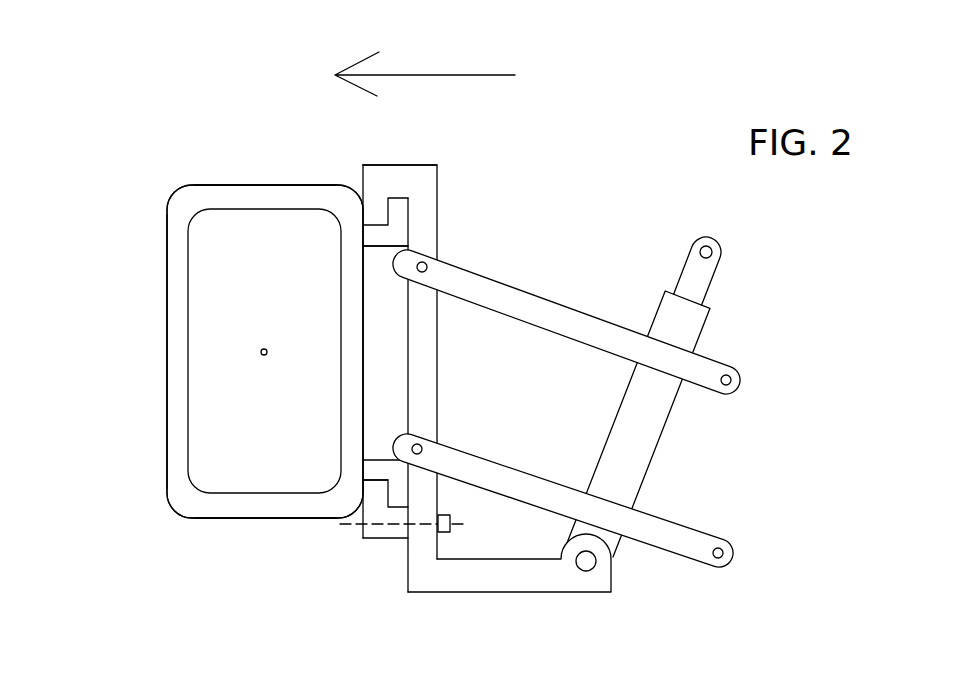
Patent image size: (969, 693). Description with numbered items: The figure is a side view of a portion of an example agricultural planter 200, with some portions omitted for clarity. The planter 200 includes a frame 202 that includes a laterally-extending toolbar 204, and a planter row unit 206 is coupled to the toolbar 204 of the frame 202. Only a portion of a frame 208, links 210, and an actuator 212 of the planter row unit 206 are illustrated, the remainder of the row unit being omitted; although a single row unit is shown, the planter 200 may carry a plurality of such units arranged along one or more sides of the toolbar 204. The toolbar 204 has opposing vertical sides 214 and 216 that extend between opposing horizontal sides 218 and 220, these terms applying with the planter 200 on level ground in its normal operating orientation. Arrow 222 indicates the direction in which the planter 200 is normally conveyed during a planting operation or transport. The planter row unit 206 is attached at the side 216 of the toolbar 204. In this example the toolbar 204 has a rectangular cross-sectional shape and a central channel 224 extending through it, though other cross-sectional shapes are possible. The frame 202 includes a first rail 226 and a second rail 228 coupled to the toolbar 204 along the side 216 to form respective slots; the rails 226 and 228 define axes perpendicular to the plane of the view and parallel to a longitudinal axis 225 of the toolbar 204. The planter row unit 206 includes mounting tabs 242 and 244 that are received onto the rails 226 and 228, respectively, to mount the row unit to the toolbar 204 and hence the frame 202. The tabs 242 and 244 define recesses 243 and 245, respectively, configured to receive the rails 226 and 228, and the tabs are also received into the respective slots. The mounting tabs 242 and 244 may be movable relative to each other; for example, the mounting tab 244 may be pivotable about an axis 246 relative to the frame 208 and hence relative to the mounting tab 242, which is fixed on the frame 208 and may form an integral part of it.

The agricultural planter 200 is at (124, 108).
The frame 202 is at (173, 510).
The toolbar 204 is at (265, 351).
The planter row unit 206 is at (437, 375).
The frame 208 is at (565, 593).
The links 210 is at (727, 393).
The actuator 212 is at (707, 332).
The vertical side 214 is at (165, 345).
The vertical side 216 is at (365, 315).
The horizontal side 218 is at (267, 185).
The horizontal side 220 is at (265, 518).
The arrow 222 is at (515, 75).
The central channel 224 is at (282, 322).
The longitudinal axis 225 is at (263, 360).
The first rail 226 is at (408, 218).
The second rail 228 is at (385, 500).
The mounting tab 242 is at (392, 180).
The recess 243 is at (398, 208).
The mounting tab 244 is at (385, 530).
The recess 245 is at (397, 493).
The axis 246 is at (452, 518).